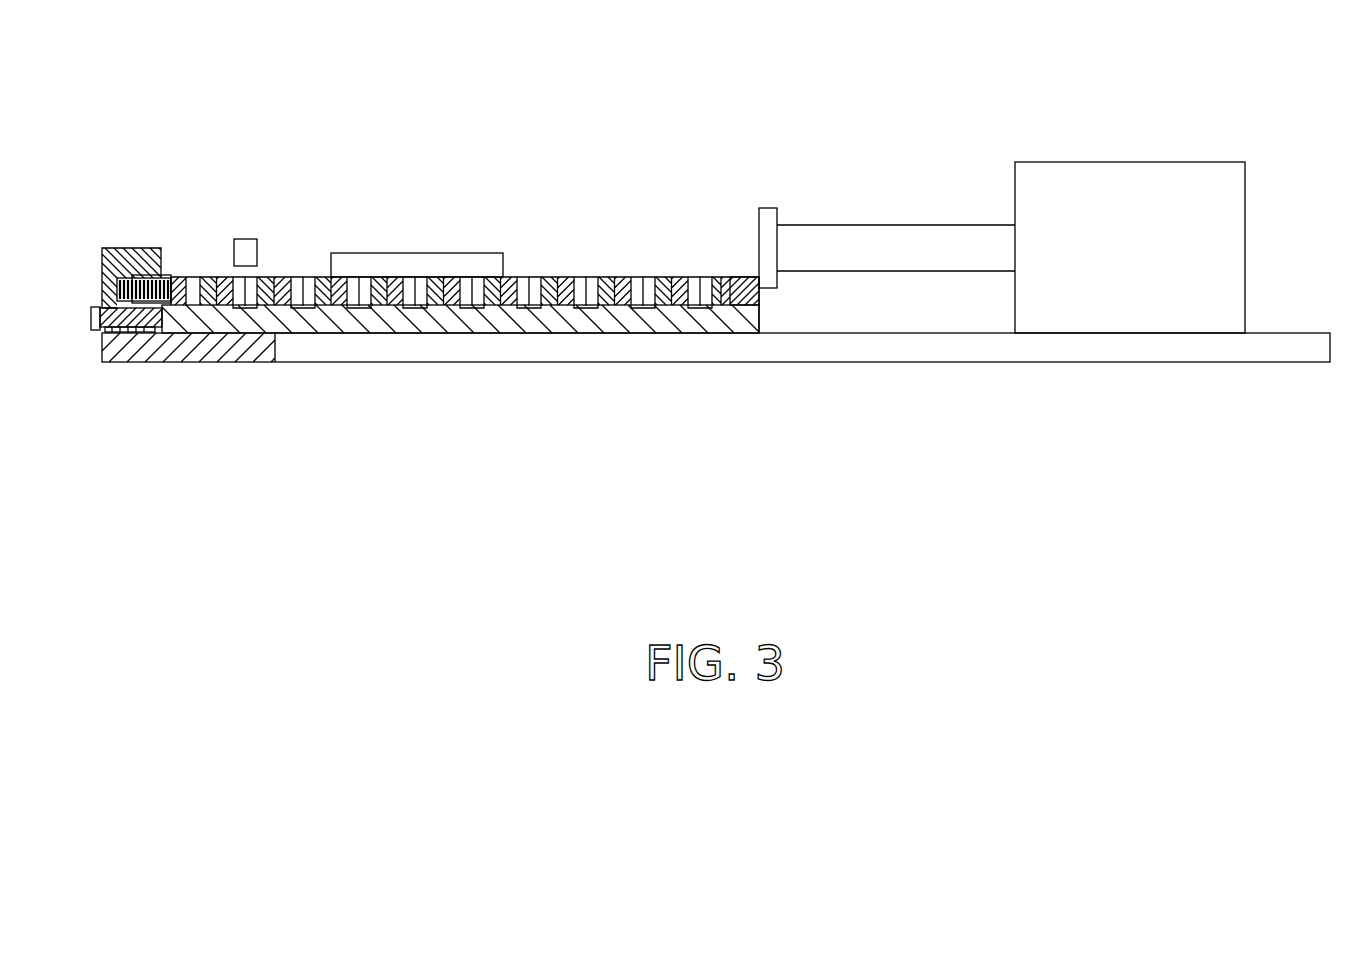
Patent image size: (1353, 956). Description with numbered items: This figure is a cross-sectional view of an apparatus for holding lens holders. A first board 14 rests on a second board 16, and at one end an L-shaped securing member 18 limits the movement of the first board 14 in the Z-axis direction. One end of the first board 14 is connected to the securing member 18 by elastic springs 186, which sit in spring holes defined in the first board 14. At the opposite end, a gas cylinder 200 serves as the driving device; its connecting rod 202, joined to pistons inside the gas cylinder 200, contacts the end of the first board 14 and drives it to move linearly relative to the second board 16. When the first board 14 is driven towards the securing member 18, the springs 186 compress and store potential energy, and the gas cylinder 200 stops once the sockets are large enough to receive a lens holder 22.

The first board 14 is at (745, 285).
The second board 16 is at (703, 322).
The securing member 18 is at (113, 247).
The elastic springs 186 is at (167, 277).
The lens holder 22 is at (250, 246).
The gas cylinder 200 is at (1110, 207).
The connecting rod 202 is at (878, 242).